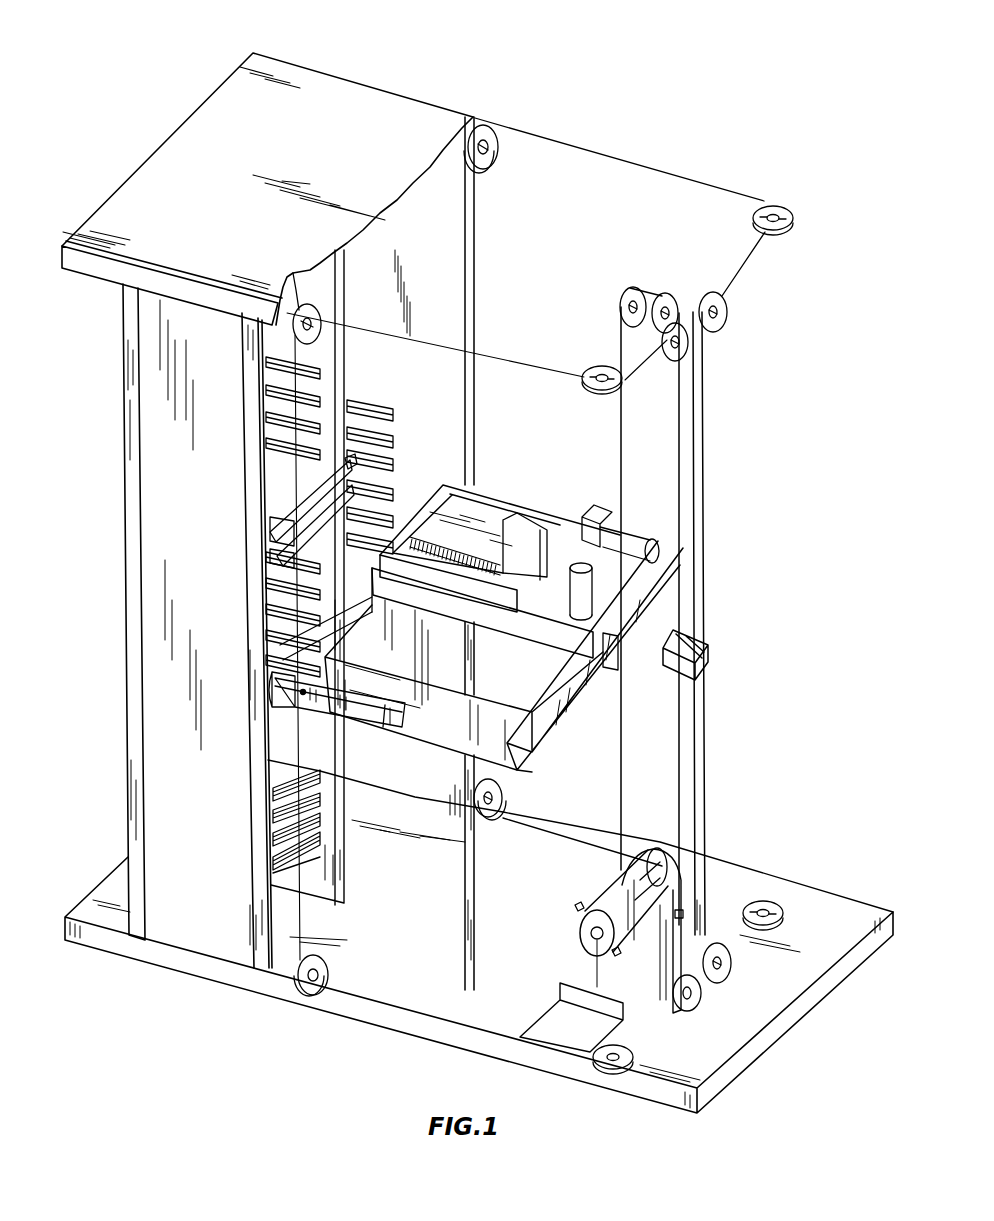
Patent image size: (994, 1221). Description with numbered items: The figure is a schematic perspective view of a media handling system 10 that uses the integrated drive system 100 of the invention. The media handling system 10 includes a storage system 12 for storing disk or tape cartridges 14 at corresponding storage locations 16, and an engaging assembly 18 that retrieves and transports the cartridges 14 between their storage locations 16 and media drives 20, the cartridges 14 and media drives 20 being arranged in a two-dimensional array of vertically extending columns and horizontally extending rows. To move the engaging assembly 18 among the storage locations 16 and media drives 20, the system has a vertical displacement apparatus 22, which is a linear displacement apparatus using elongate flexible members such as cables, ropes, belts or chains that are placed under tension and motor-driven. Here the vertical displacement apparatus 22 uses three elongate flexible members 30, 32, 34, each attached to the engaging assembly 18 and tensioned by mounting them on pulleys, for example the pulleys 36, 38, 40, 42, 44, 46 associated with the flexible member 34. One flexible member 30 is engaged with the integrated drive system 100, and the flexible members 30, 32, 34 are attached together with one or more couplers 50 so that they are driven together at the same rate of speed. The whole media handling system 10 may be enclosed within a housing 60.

The media handling system 10 is at (472, 92).
The storage system 12 is at (296, 305).
The cartridges 14 is at (270, 540).
The storage locations 16 is at (266, 418).
The engaging assembly 18 is at (535, 493).
The media drives 20 is at (273, 857).
The vertical displacement apparatus 22 is at (718, 752).
The elongate flexible member 30 is at (686, 425).
The elongate flexible member 32 is at (492, 358).
The elongate flexible member 34 is at (681, 175).
The pulley 36 is at (490, 130).
The pulley 38 is at (795, 214).
The pulley 40 is at (727, 310).
The pulley 42 is at (731, 958).
The pulley 44 is at (770, 905).
The pulley 46 is at (504, 796).
The coupler 50 is at (712, 650).
The housing 60 is at (736, 1039).
The integrated drive system 100 is at (573, 916).